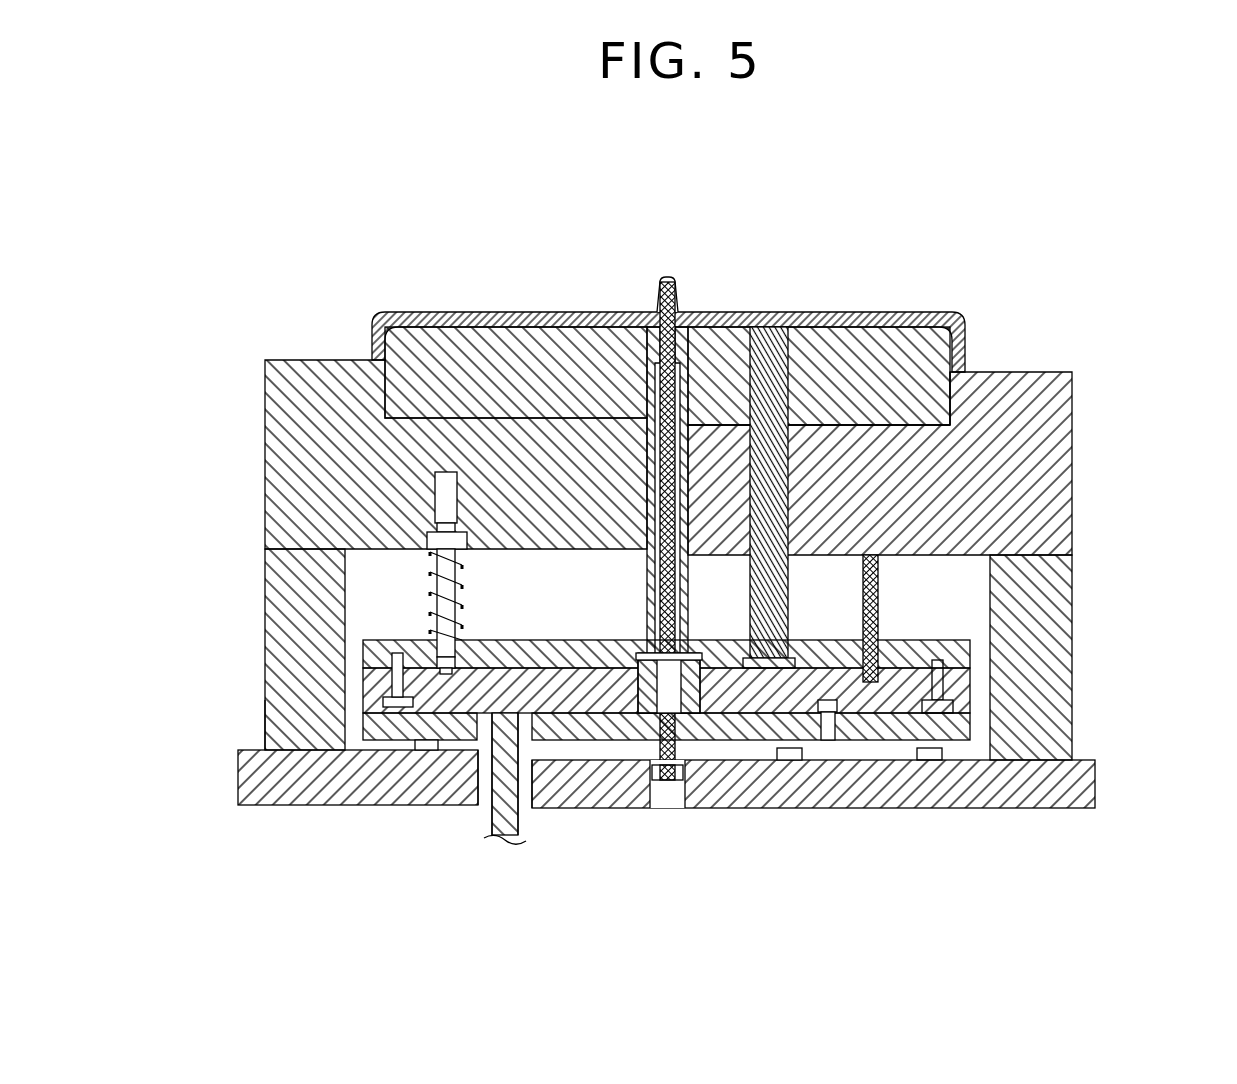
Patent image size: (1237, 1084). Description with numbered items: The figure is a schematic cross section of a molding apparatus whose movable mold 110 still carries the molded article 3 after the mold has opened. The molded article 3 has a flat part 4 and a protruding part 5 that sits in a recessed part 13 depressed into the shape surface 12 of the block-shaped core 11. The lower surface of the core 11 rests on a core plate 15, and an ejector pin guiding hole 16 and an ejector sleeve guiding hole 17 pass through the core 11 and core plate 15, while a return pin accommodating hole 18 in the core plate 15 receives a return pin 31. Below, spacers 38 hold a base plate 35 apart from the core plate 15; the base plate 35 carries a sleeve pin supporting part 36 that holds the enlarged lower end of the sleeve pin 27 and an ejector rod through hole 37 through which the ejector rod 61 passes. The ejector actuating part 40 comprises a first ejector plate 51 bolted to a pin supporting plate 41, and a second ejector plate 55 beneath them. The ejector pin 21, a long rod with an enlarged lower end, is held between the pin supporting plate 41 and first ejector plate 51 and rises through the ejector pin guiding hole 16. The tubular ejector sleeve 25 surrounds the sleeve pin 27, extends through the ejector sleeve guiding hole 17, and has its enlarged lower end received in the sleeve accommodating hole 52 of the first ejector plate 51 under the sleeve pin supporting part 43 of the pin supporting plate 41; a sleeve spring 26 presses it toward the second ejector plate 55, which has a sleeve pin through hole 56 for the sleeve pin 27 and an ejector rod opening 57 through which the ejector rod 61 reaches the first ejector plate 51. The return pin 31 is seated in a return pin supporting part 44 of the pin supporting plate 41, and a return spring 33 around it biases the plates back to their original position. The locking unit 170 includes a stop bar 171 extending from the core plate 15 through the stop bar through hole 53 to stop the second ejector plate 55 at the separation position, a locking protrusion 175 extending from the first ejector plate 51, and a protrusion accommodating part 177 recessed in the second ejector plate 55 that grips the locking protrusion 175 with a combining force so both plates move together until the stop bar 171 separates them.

The movable mold 110 is at (297, 316).
The core 11 is at (608, 213).
The shape surface 12 is at (552, 330).
The recessed part 13 is at (645, 375).
The molded article 3 is at (752, 213).
The protruding part 5 is at (683, 310).
The flat part 4 is at (760, 345).
The ejector pin guiding hole 16 is at (818, 385).
The ejector sleeve guiding hole 17 is at (518, 322).
The core plate 15 is at (265, 386).
The ejector pin 21 is at (985, 410).
The ejector sleeve 25 is at (870, 427).
The sleeve pin 27 is at (800, 470).
The return pin accommodating hole 18 is at (435, 492).
The return spring 33 is at (430, 556).
The return pin 31 is at (345, 552).
The sleeve pin supporting part 43 is at (615, 700).
The sleeve spring 26 is at (692, 652).
The stop bar through hole 53 is at (848, 655).
The locking unit 170 is at (1162, 605).
The stop bar 171 is at (1030, 608).
The locking protrusion 175 is at (950, 692).
The protrusion accommodating part 177 is at (1010, 735).
The return pin supporting part 44 is at (365, 672).
The spacers 38 is at (265, 722).
The base plate 35 is at (308, 805).
The ejector rod opening 57 is at (410, 805).
The ejector rod through hole 37 is at (483, 806).
The ejector rod 61 is at (512, 843).
The second ejector plate 55 is at (578, 745).
The first ejector plate 51 is at (585, 706).
The pin supporting plate 41 is at (600, 692).
The sleeve pin supporting part 36 is at (673, 787).
The sleeve pin through hole 56 is at (690, 718).
The sleeve accommodating hole 52 is at (702, 715).
The ejector actuating part 40 is at (510, 913).